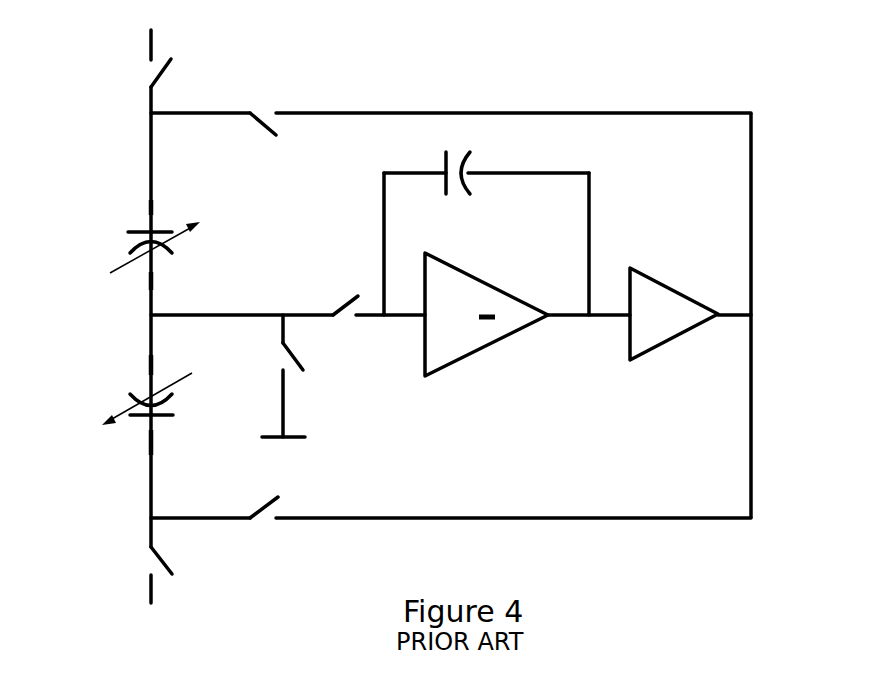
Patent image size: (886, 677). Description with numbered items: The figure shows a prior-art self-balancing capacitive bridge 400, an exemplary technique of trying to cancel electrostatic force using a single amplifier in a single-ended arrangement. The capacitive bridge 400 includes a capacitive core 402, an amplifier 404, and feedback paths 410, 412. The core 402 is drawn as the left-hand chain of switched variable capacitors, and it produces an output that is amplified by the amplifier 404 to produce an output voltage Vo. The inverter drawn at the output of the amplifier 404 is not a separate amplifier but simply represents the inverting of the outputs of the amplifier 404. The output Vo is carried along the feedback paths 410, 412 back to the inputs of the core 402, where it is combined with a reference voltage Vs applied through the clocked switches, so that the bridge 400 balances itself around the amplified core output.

The self-balancing capacitive bridge 400 is at (627, 57).
The capacitive core 402 is at (94, 164).
The amplifier 404 is at (609, 397).
The feedback path 410 is at (753, 163).
The feedback path 412 is at (753, 422).